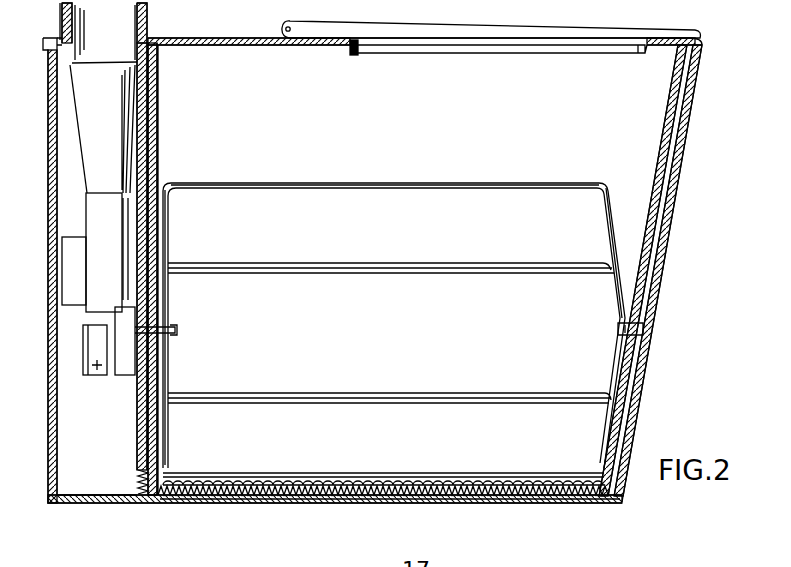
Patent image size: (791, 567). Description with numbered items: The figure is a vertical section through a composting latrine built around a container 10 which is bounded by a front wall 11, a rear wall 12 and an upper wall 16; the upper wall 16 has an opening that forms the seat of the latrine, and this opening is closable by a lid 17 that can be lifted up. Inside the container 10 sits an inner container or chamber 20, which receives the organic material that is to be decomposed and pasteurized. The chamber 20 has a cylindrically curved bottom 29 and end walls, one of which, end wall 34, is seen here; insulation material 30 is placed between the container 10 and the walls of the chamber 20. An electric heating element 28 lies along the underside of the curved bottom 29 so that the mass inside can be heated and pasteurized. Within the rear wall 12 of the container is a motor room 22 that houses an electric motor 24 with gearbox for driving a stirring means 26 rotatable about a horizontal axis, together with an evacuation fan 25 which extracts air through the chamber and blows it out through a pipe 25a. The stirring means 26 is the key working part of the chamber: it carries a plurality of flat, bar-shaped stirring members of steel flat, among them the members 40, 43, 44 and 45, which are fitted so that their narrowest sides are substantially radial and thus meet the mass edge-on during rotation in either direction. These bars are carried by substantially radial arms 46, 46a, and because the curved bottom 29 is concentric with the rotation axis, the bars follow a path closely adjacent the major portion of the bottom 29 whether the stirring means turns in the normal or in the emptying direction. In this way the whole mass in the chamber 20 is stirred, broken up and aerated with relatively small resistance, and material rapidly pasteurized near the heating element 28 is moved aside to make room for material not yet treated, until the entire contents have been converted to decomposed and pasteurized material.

The container 10 is at (669, 230).
The front wall 11 is at (642, 370).
The rear wall 12 is at (50, 505).
The upper wall 16 is at (237, 48).
The lid 17 is at (480, 25).
The inner container or chamber 20 is at (460, 340).
The motor room 22 is at (102, 463).
The electric motor 24 is at (97, 372).
The evacuation fan 25 is at (112, 263).
The pipe 25a is at (150, 25).
The stirring means 26 is at (412, 183).
The electric heating element 28 is at (327, 494).
The curved bottom 29 is at (357, 470).
The insulation material 30 is at (377, 494).
The end wall 34 is at (157, 141).
The stirring member 40 is at (268, 185).
The stirring member 43 is at (278, 462).
The stirring member 44 is at (275, 393).
The stirring member 45 is at (270, 265).
The radial arm 46 is at (170, 229).
The radial arm 46a is at (610, 225).